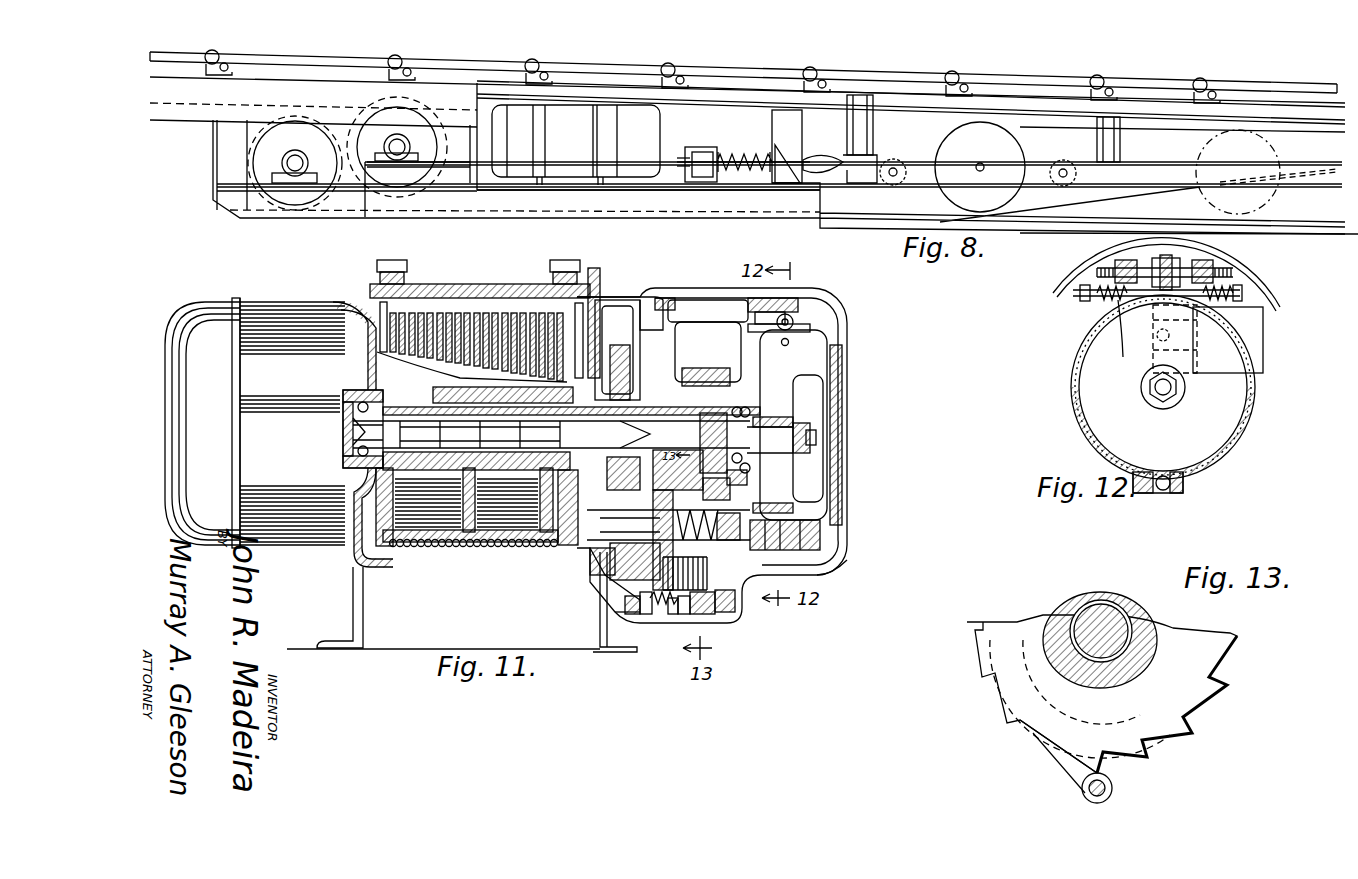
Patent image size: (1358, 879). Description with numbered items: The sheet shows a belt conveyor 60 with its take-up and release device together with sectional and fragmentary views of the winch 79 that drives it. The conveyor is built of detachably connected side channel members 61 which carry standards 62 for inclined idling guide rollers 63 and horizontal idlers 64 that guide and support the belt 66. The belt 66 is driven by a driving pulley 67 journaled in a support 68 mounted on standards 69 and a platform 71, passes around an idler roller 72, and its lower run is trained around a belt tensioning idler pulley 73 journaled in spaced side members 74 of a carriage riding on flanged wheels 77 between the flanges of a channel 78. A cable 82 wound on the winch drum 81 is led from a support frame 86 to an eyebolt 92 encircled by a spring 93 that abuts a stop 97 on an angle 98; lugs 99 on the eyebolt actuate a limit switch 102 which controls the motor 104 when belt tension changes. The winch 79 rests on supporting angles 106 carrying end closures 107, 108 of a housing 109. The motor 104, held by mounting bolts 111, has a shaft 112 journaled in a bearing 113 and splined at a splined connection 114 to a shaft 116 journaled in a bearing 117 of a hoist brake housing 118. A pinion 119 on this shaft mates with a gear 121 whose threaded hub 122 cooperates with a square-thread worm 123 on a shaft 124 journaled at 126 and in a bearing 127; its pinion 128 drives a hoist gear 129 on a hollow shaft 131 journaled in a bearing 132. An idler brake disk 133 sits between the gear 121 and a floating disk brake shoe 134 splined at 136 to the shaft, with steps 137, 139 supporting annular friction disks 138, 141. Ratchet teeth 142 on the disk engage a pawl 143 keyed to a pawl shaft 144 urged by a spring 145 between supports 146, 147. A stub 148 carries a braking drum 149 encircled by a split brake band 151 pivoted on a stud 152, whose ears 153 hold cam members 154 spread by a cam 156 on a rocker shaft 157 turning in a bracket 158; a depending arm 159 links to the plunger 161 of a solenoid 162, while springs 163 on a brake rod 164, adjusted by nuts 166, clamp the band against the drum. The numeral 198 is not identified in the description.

In FIG. 8, the belt conveyor 60 is at (748, 58).
In FIG. 8, the side channel members 61 is at (893, 88).
In FIG. 8, the standards 62 is at (228, 66).
In FIG. 8, the inclined idling guide rollers 63 is at (218, 52).
In FIG. 8, the horizontal idlers 64 is at (240, 74).
In FIG. 8, the belt 66 is at (495, 78).
In FIG. 8, the driving pulley 67 is at (410, 172).
In FIG. 8, the support 68 is at (397, 165).
In FIG. 8, the standards 69 is at (365, 200).
In FIG. 8, the platform 71 is at (440, 166).
In FIG. 8, the idler roller 72 is at (285, 200).
In FIG. 8, the belt tensioning idler pulley 73 is at (942, 186).
In FIG. 8, the spaced side members 74 is at (1037, 165).
In FIG. 8, the flanged wheels 77 is at (895, 160).
In FIG. 8, the channel 78 is at (950, 158).
In FIG. 11, the winch 79 is at (629, 270).
In FIG. 11, the winch drum 81 is at (480, 549).
In FIG. 11, the cable 82 is at (447, 548).
In FIG. 8, the support frame 86 is at (645, 186).
In FIG. 11, the support frame 86 is at (575, 472).
In FIG. 8, the eyebolt 92 is at (820, 158).
In FIG. 8, the spring 93 is at (752, 149).
In FIG. 8, the stop 97 is at (798, 142).
In FIG. 8, the angle 98 is at (782, 188).
In FIG. 8, the lugs 99 is at (700, 148).
In FIG. 8, the limit switch 102 is at (725, 152).
In FIG. 11, the motor 104 is at (296, 308).
In FIG. 11, the supporting angles 106 is at (364, 612).
In FIG. 11, the end closure 107 is at (378, 300).
In FIG. 11, the end closure 108 is at (588, 285).
In FIG. 11, the housing 109 is at (472, 288).
In FIG. 11, the mounting bolts 111 is at (352, 318).
In FIG. 11, the shaft 112 is at (352, 462).
In FIG. 11, the bearing 113 is at (345, 443).
In FIG. 11, the splined connection 114 is at (428, 470).
In FIG. 11, the shaft 116 is at (520, 472).
In FIG. 11, the bearing 117 is at (750, 462).
In FIG. 11, the hoist brake housing 118 is at (672, 296).
In FIG. 12, the hoist brake housing 118 is at (1280, 303).
In FIG. 11, the pinion 119 is at (700, 420).
In FIG. 11, the gear 121 is at (762, 418).
In FIG. 13, the gear 121 is at (1125, 675).
In FIG. 11, the hub 122 is at (728, 603).
In FIG. 11, the square-thread worm 123 is at (652, 560).
In FIG. 11, the shaft 124 is at (625, 560).
In FIG. 13, the shaft 124 is at (1110, 651).
In FIG. 11, the journal 126 is at (573, 562).
In FIG. 11, the bearing 127 is at (742, 575).
In FIG. 11, the pinion 128 is at (595, 585).
In FIG. 11, the hoist gear 129 is at (618, 367).
In FIG. 11, the hollow shaft 131 is at (617, 350).
In FIG. 11, the bearing 132 is at (408, 385).
In FIG. 11, the idler brake disk 133 is at (702, 612).
In FIG. 13, the idler brake disk 133 is at (1185, 686).
In FIG. 11, the floating disk brake shoe 134 is at (655, 625).
In FIG. 11, the spline 136 is at (652, 436).
In FIG. 11, the step 137 is at (745, 498).
In FIG. 11, the annular friction disk 138 is at (752, 478).
In FIG. 11, the step 139 is at (669, 447).
In FIG. 11, the annular friction disk 141 is at (660, 625).
In FIG. 13, the ratchet teeth 142 is at (1010, 712).
In FIG. 11, the pawl 143 is at (680, 620).
In FIG. 13, the pawl 143 is at (1068, 765).
In FIG. 11, the pawl shaft 144 is at (690, 615).
In FIG. 13, the pawl shaft 144 is at (1112, 788).
In FIG. 11, the spring 145 is at (665, 620).
In FIG. 11, the support 146 is at (640, 615).
In FIG. 11, the support 147 is at (724, 604).
In FIG. 12, the stub 148 is at (1170, 395).
In FIG. 11, the braking drum 149 is at (842, 370).
In FIG. 12, the braking drum 149 is at (1153, 444).
In FIG. 12, the split brake band 151 is at (1213, 463).
In FIG. 11, the stud 152 is at (836, 558).
In FIG. 12, the stud 152 is at (1170, 490).
In FIG. 12, the ears 153 is at (1112, 266).
In FIG. 11, the cam members 154 is at (790, 330).
In FIG. 12, the cam members 154 is at (1148, 262).
In FIG. 11, the cam 156 is at (795, 324).
In FIG. 12, the cam 156 is at (1157, 337).
In FIG. 11, the rocker shaft 157 is at (790, 312).
In FIG. 11, the bracket 158 is at (760, 312).
In FIG. 12, the depending arm 159 is at (1189, 339).
In FIG. 12, the plunger 161 is at (1191, 345).
In FIG. 11, the solenoid 162 is at (717, 364).
In FIG. 12, the solenoid 162 is at (1265, 322).
In FIG. 12, the springs 163 is at (1245, 290).
In FIG. 11, the brake rod 164 is at (790, 343).
In FIG. 12, the brake rod 164 is at (1123, 358).
In FIG. 12, the nuts 166 is at (1236, 293).
In FIG. 11, the bolt 198 is at (801, 424).